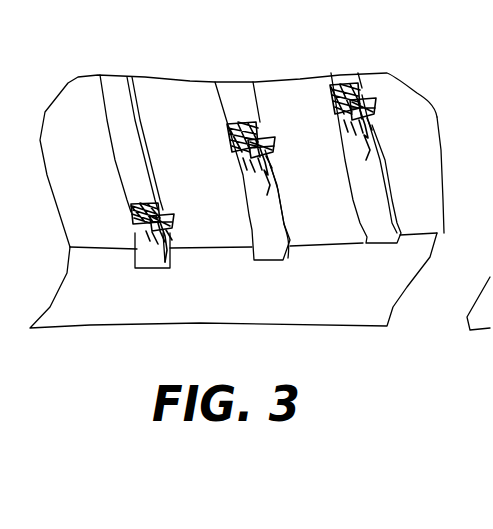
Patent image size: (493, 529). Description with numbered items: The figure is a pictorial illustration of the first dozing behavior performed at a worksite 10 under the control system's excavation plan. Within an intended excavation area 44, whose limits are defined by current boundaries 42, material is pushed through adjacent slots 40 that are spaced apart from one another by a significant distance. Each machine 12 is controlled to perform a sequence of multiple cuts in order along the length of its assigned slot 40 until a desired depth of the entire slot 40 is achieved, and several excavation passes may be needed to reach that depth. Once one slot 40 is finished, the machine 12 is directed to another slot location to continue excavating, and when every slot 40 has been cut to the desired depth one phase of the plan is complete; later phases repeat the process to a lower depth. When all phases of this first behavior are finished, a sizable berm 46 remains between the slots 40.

The worksite 10 is at (259, 226).
The machine 12 is at (165, 206).
The slot 40 is at (122, 154).
The current boundary 42 is at (442, 136).
The excavation area 44 is at (433, 200).
The berm 46 is at (173, 104).